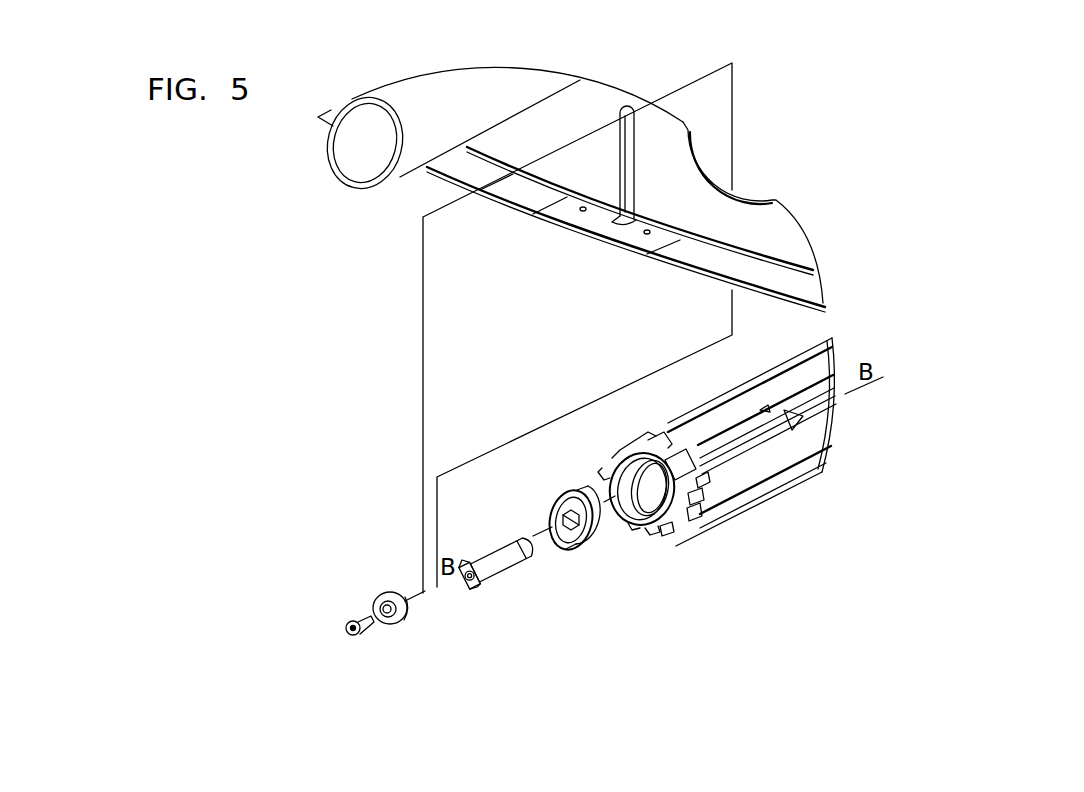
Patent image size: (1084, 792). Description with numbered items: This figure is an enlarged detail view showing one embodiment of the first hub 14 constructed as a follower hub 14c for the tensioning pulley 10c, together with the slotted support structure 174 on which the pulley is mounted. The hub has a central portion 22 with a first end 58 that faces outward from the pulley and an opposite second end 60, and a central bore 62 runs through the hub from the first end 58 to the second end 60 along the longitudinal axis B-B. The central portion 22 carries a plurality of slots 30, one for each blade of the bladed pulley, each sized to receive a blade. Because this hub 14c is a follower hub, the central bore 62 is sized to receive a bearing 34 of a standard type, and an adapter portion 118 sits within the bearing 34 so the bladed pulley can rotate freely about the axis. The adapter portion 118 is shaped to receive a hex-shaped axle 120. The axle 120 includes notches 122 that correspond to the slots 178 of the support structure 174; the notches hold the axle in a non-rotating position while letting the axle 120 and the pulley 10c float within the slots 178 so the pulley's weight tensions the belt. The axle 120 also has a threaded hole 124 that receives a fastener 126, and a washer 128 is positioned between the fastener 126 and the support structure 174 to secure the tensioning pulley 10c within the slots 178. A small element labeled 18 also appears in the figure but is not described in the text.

The tensioning pulley 10c is at (800, 546).
The first hub 14 is at (654, 504).
The follower hub 14c is at (658, 450).
The flange 18 is at (613, 457).
The central portion 22 is at (655, 512).
The slots 30 is at (690, 502).
The bearing 34 is at (578, 542).
The first end 58 is at (637, 525).
The second end 60 is at (668, 447).
The central bore 62 is at (612, 483).
The adapter portion 118 is at (557, 508).
The axle 120 is at (492, 580).
The notches 122 is at (472, 558).
The threaded hole 124 is at (466, 580).
The fastener 126 is at (349, 622).
The washer 128 is at (393, 627).
The slotted support structure 174 is at (555, 117).
The slots 178 is at (635, 130).